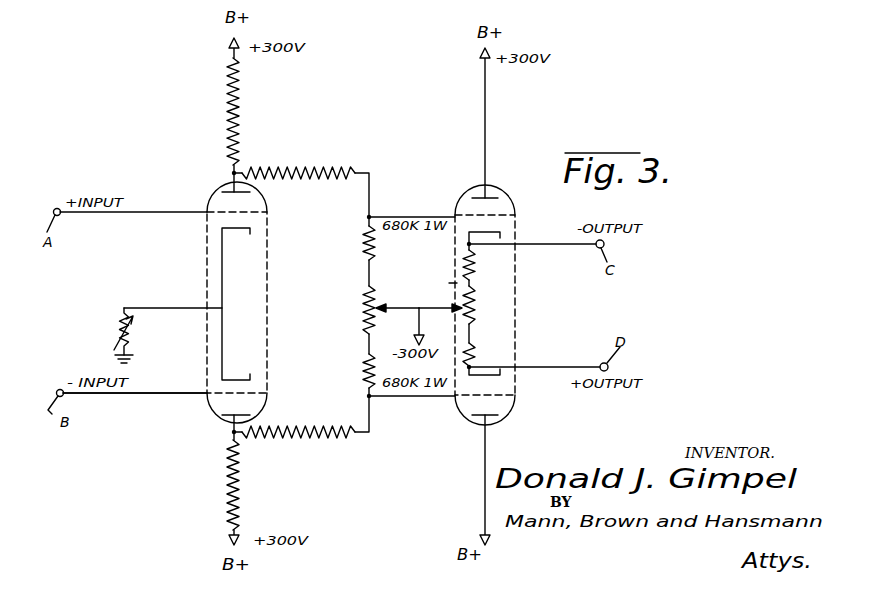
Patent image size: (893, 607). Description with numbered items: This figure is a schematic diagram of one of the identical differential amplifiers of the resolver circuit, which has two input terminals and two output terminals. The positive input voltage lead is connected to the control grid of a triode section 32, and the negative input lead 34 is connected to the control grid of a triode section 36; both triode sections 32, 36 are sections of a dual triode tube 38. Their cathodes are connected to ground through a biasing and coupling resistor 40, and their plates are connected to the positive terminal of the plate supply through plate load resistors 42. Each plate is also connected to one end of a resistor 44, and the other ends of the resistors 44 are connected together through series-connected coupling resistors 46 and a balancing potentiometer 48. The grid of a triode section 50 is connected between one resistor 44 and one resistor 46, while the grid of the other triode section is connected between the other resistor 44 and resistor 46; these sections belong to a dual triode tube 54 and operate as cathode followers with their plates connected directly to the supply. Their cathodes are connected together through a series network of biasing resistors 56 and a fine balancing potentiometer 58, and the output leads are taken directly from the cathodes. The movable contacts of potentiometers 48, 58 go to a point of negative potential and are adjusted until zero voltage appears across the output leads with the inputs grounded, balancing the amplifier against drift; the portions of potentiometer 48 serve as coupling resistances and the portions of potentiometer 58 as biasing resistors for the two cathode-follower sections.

The triode section 32 is at (213, 194).
The negative input lead 34 is at (150, 394).
The triode section 36 is at (209, 420).
The dual triode tube 38 is at (268, 358).
The biasing and coupling resistor 40 is at (118, 325).
The plate load resistors 42 is at (230, 115).
The resistors 44 is at (306, 168).
The coupling resistors 46 is at (365, 240).
The balancing potentiometer 48 is at (365, 305).
The triode section 50 is at (461, 194).
The dual triode tube 54 is at (521, 204).
The biasing resistors 56 is at (462, 258).
The fine balancing potentiometer 58 is at (468, 312).